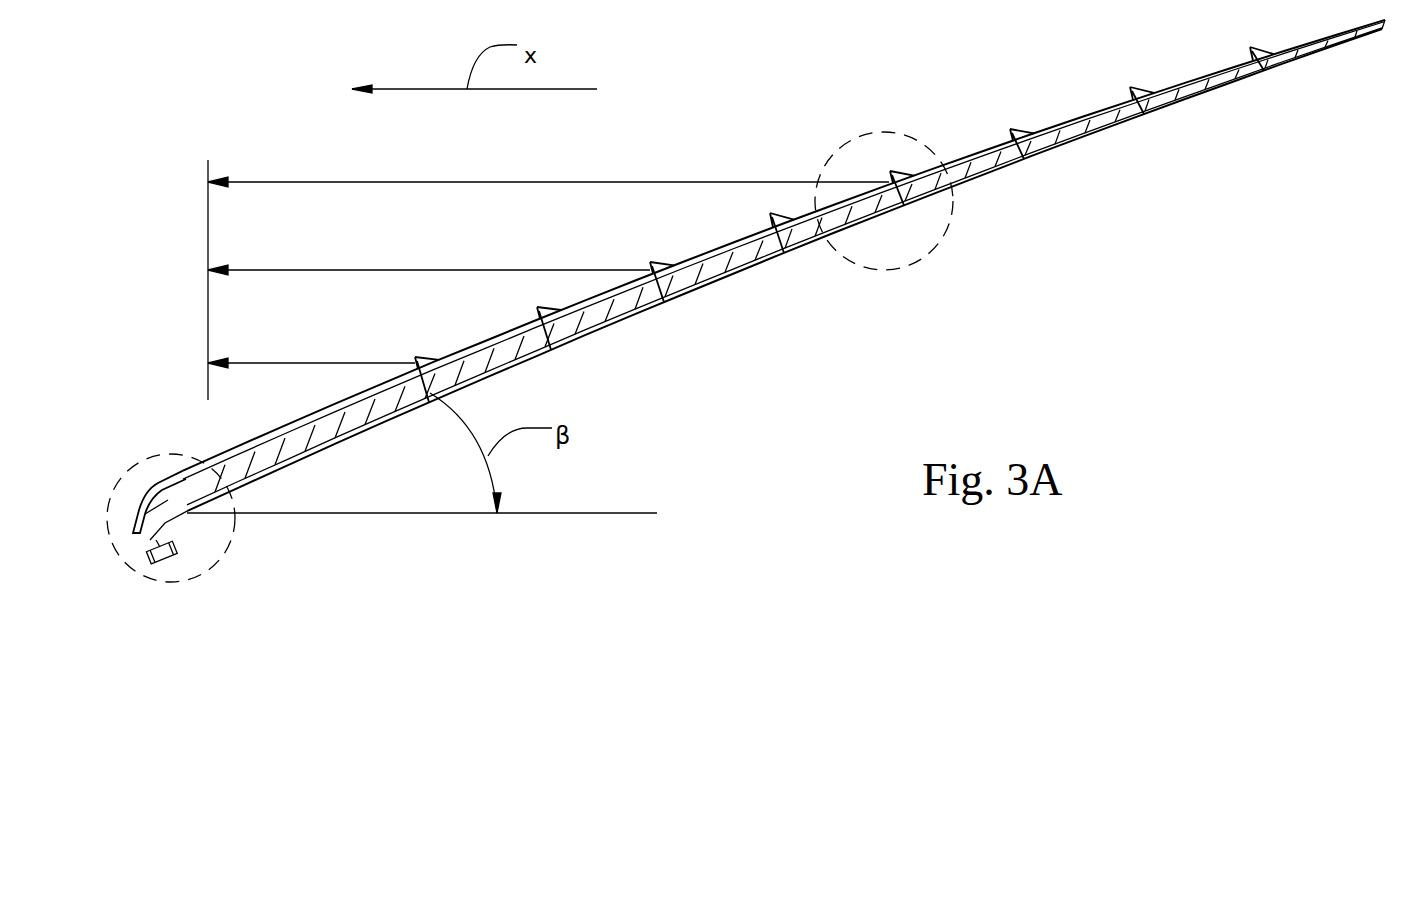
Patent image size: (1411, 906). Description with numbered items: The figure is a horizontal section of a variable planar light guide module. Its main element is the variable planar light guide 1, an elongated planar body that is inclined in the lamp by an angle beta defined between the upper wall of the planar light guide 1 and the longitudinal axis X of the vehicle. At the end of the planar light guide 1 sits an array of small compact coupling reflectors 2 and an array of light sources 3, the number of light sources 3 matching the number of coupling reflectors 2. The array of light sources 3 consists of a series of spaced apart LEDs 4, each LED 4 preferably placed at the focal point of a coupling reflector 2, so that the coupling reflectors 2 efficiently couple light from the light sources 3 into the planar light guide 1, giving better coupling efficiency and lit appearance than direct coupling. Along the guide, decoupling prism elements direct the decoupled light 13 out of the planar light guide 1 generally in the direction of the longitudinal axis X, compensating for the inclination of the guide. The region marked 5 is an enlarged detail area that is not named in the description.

The variable planar light guide 1 is at (975, 172).
The coupling compact reflector 2 is at (150, 497).
The light source 3 is at (172, 556).
The LED 4 is at (895, 132).
The end region detail 5 is at (168, 455).
The decoupled light 13 is at (553, 167).